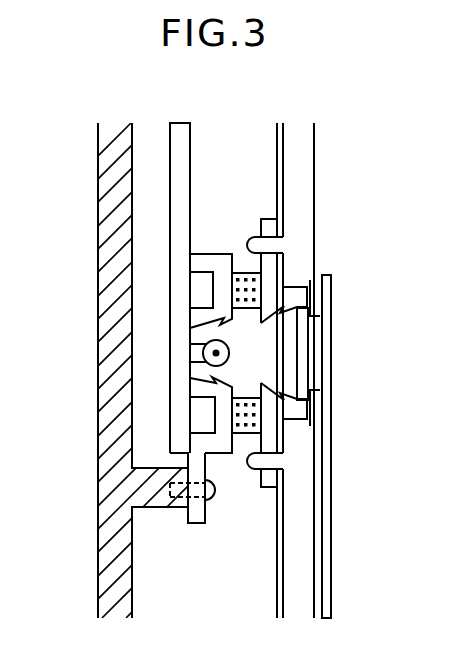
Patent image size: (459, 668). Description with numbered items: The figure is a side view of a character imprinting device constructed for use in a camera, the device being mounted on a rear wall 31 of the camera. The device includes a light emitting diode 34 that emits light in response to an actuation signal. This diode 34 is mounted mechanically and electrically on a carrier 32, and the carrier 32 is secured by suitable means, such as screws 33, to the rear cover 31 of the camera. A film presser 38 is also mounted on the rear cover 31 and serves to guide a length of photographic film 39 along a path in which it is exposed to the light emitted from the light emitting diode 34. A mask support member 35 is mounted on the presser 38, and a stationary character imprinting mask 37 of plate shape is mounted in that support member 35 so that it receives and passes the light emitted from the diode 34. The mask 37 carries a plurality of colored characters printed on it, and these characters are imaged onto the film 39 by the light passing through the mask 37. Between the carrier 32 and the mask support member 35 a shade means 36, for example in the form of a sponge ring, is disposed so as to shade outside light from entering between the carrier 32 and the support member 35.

The rear wall 31 is at (100, 353).
The carrier 32 is at (180, 162).
The screws 33 is at (206, 500).
The light emitting diode 34 is at (230, 353).
The mask support member 35 is at (282, 273).
The shade means 36 is at (245, 435).
The character imprinting mask 37 is at (308, 355).
The film presser 38 is at (305, 182).
The photographic film 39 is at (332, 440).